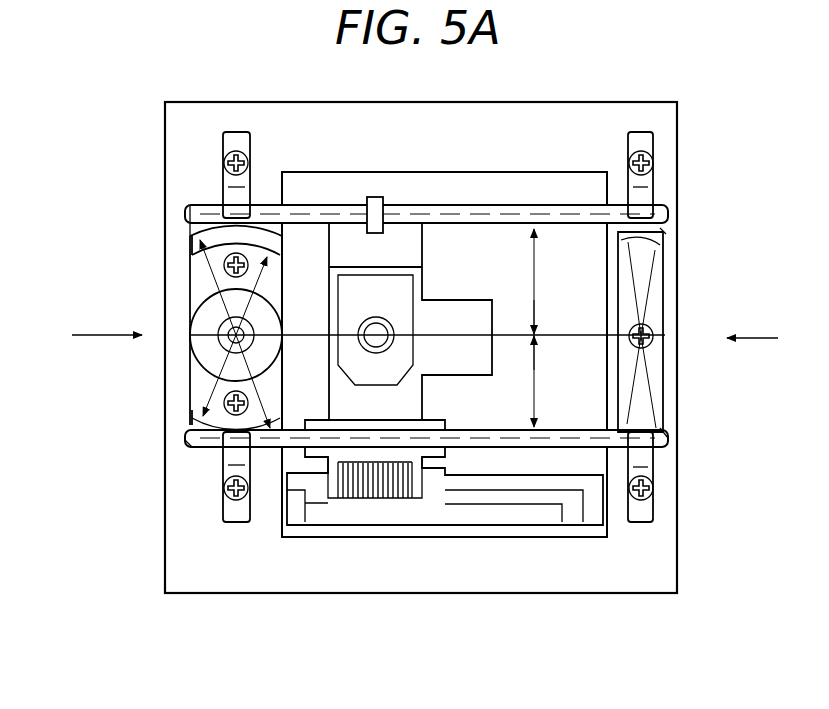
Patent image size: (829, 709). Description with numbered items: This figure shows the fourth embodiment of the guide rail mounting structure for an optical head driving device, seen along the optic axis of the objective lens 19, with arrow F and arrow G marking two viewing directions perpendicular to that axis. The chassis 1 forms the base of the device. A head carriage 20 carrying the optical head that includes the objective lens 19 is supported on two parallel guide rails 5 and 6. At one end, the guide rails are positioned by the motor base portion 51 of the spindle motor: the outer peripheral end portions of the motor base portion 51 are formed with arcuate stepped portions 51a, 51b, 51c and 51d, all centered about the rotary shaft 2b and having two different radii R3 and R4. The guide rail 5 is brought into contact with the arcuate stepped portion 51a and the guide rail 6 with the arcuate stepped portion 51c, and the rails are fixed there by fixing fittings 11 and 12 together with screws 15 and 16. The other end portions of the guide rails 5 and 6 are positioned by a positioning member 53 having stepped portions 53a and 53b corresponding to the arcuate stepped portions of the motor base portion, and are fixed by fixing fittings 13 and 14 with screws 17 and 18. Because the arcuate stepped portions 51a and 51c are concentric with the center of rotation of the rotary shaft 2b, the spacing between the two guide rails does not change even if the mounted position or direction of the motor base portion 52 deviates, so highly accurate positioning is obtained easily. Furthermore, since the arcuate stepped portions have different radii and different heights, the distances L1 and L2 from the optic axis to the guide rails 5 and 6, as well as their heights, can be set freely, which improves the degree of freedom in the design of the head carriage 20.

The chassis 1 is at (318, 588).
The rotary shaft 2b is at (196, 350).
The guide rail 5 is at (478, 445).
The guide rail 6 is at (478, 208).
The fixing fitting 11 is at (228, 510).
The fixing fitting 12 is at (236, 132).
The fixing fitting 13 is at (641, 522).
The fixing fitting 14 is at (641, 132).
The screw 15 is at (240, 500).
The screw 16 is at (248, 160).
The screw 17 is at (653, 496).
The screw 18 is at (653, 160).
The objective lens 19 is at (378, 326).
The head carriage 20 is at (372, 428).
The motor base portion 51 is at (200, 290).
The arcuate stepped portion 51a is at (190, 420).
The arcuate stepped portion 51b is at (190, 245).
The arcuate stepped portion 51c is at (208, 225).
The arcuate stepped portion 51d is at (195, 447).
The motor base portion 52 is at (653, 344).
The positioning member 53 is at (661, 322).
The stepped portion 53a is at (663, 434).
The stepped portion 53b is at (663, 234).
The radius R3 is at (262, 287).
The radius R4 is at (190, 275).
The distance L1 is at (536, 381).
The distance L2 is at (536, 282).
The arrow F is at (107, 321).
The arrow G is at (752, 324).